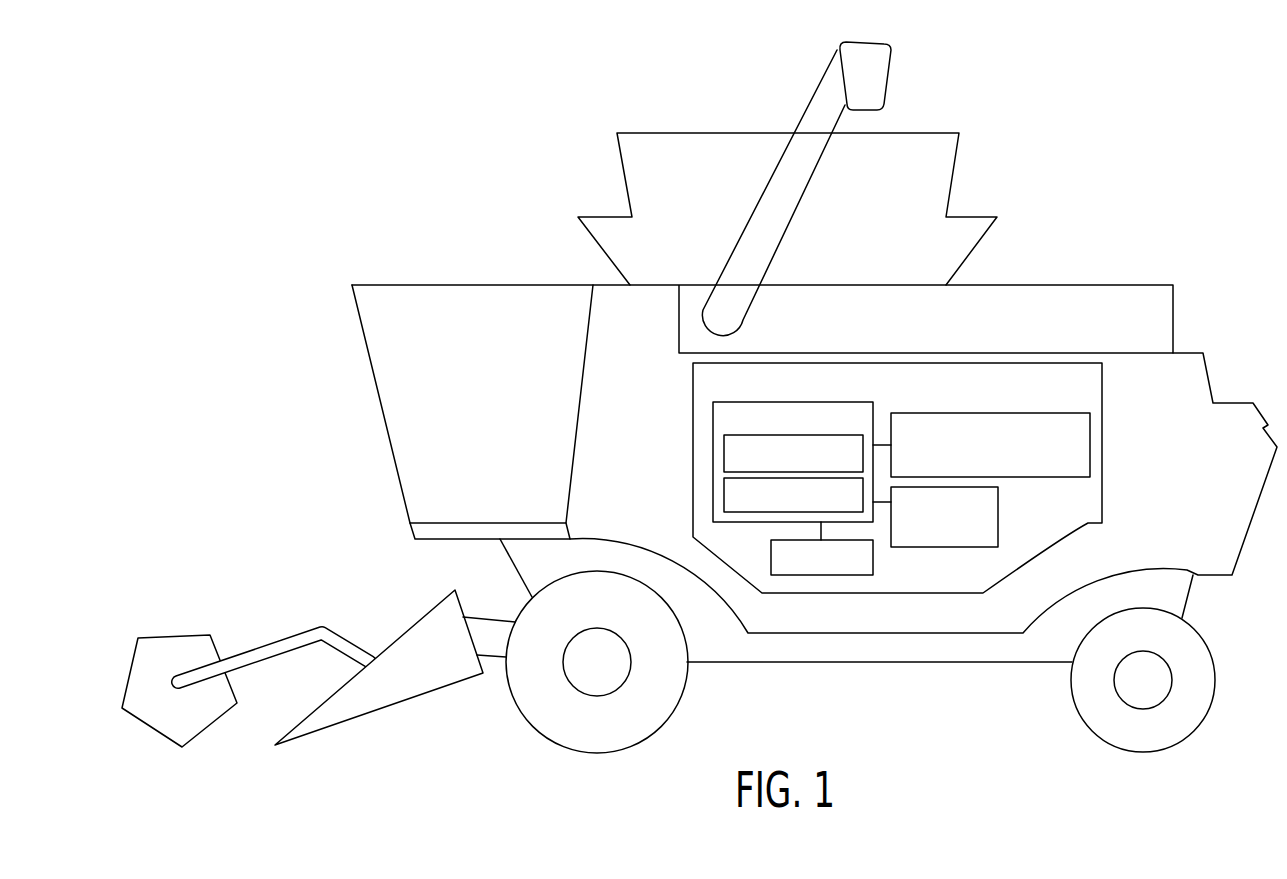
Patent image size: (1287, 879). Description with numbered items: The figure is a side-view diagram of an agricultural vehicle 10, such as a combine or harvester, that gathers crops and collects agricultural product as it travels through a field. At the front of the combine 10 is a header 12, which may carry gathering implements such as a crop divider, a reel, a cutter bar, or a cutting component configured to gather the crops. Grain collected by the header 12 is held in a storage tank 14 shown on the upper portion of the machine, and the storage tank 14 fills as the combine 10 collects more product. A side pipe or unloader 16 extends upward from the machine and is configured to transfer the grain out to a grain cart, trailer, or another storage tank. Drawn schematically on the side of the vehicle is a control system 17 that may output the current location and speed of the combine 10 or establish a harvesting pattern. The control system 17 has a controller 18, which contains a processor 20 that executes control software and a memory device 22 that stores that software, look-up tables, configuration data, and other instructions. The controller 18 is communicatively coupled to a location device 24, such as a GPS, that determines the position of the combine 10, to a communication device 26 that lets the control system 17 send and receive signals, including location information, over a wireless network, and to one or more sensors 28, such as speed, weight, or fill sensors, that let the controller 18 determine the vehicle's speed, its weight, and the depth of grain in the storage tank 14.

The agricultural vehicle 10 is at (1167, 213).
The header 12 is at (233, 563).
The storage tank 14 is at (707, 152).
The unloader 16 is at (833, 110).
The control system 17 is at (693, 380).
The controller 18 is at (713, 497).
The processor 20 is at (724, 450).
The memory device 22 is at (724, 493).
The location device 24 is at (998, 513).
The communication device 26 is at (990, 413).
The sensors 28 is at (820, 578).